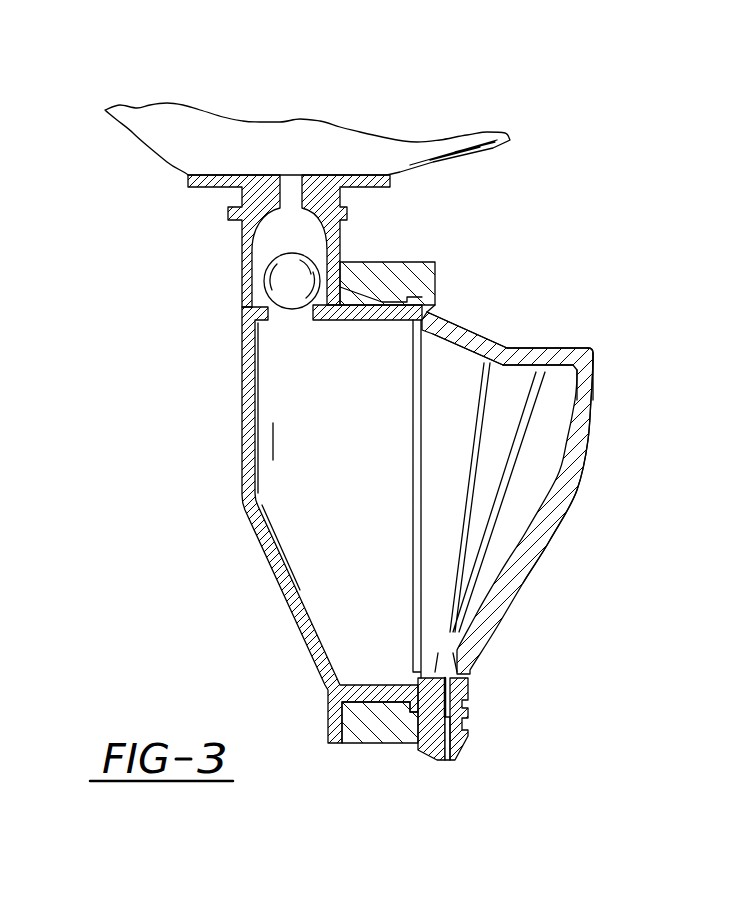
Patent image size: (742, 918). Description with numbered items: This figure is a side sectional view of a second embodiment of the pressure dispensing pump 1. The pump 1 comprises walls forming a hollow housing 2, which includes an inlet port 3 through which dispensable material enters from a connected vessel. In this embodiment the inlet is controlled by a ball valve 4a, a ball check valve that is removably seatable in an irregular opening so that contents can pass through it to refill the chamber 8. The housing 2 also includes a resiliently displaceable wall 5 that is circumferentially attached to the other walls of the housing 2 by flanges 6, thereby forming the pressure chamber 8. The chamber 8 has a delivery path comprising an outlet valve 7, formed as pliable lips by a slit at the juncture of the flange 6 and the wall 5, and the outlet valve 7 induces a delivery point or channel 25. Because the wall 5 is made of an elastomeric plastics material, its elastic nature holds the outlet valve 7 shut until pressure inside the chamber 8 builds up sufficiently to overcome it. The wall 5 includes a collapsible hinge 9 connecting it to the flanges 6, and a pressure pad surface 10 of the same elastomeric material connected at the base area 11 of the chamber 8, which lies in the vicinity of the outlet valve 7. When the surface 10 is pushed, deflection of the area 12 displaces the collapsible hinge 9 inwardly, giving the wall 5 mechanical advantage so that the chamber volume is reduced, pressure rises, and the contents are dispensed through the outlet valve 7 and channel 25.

The pressure dispensing pump 1 is at (602, 343).
The hollow housing 2 is at (278, 593).
The inlet port 3 is at (282, 208).
The ball valve 4a is at (273, 283).
The resiliently displaceable wall 5 is at (597, 432).
The flanges 6 is at (408, 257).
The outlet valve 7 is at (453, 763).
The pressure chamber 8 is at (356, 478).
The collapsible hinge 9 is at (474, 327).
The pressure pad surface 10 is at (585, 485).
The base area 11 is at (466, 720).
The area 12 is at (522, 343).
The delivery point or channel 25 is at (467, 741).